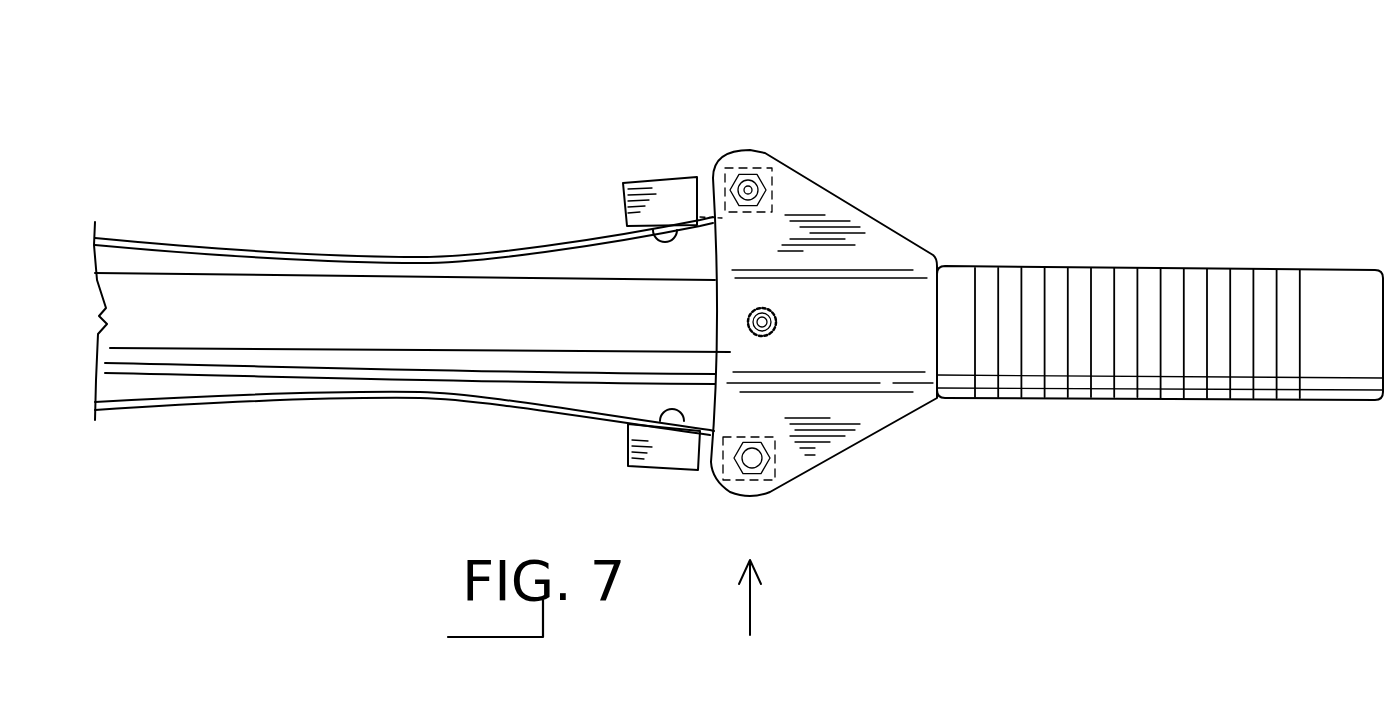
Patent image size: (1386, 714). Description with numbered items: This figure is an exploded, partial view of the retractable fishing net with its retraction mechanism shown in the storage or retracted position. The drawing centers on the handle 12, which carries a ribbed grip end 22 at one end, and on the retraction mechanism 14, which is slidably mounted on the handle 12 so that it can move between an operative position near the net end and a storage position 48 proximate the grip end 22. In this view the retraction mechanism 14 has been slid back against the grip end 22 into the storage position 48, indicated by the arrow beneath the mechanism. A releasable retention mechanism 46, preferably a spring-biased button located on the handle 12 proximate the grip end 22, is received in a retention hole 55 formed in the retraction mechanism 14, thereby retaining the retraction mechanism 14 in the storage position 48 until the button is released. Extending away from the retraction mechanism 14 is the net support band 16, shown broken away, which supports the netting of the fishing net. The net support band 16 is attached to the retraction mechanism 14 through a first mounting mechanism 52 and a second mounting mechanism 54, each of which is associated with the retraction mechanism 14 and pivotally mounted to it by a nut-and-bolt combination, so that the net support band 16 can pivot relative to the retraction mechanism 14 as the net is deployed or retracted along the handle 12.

The handle 12 is at (1021, 257).
The retraction mechanism 14 is at (871, 457).
The net support band 16 is at (408, 250).
The grip end 22 is at (1150, 265).
The releasable retention mechanism 46 is at (777, 310).
The storage position 48 is at (750, 635).
The first mounting mechanism 52 is at (630, 455).
The second mounting mechanism 54 is at (667, 187).
The retention hole 55 is at (765, 308).